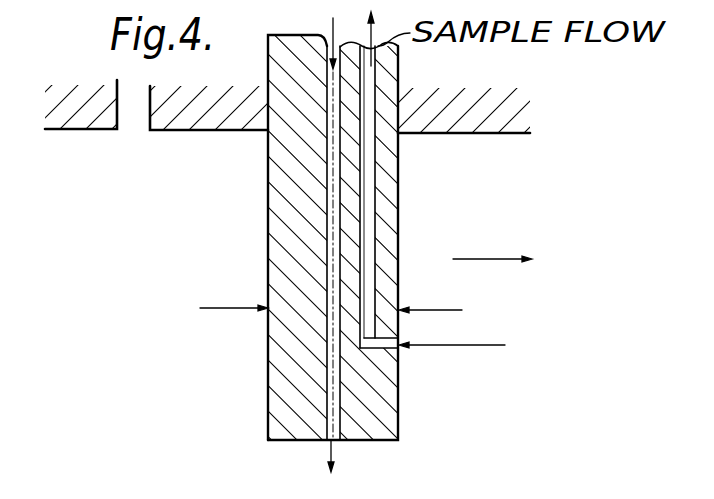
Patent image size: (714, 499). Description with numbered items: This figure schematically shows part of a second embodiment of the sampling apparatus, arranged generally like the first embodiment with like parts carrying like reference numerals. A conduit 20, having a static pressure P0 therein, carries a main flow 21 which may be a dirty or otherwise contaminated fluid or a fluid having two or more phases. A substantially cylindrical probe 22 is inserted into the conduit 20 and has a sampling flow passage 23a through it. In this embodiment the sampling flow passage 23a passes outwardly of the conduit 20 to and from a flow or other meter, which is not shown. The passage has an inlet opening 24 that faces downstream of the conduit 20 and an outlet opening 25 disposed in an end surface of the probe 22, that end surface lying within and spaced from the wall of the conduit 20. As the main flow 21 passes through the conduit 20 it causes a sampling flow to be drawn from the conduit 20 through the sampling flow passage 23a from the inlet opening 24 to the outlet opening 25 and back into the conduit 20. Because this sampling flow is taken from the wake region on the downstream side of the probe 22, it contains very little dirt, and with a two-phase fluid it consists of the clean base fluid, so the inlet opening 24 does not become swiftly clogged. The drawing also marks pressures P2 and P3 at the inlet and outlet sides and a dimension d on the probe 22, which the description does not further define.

The conduit 20 is at (478, 134).
The main flow 21 is at (497, 256).
The probe 22 is at (296, 248).
The sampling flow passage 23a is at (367, 222).
The inlet opening 24 is at (392, 356).
The outlet opening 25 is at (334, 429).
The static pressure P0 is at (130, 112).
The pressure P2 is at (470, 361).
The pressure P3 is at (304, 473).
The dimension d is at (298, 352).